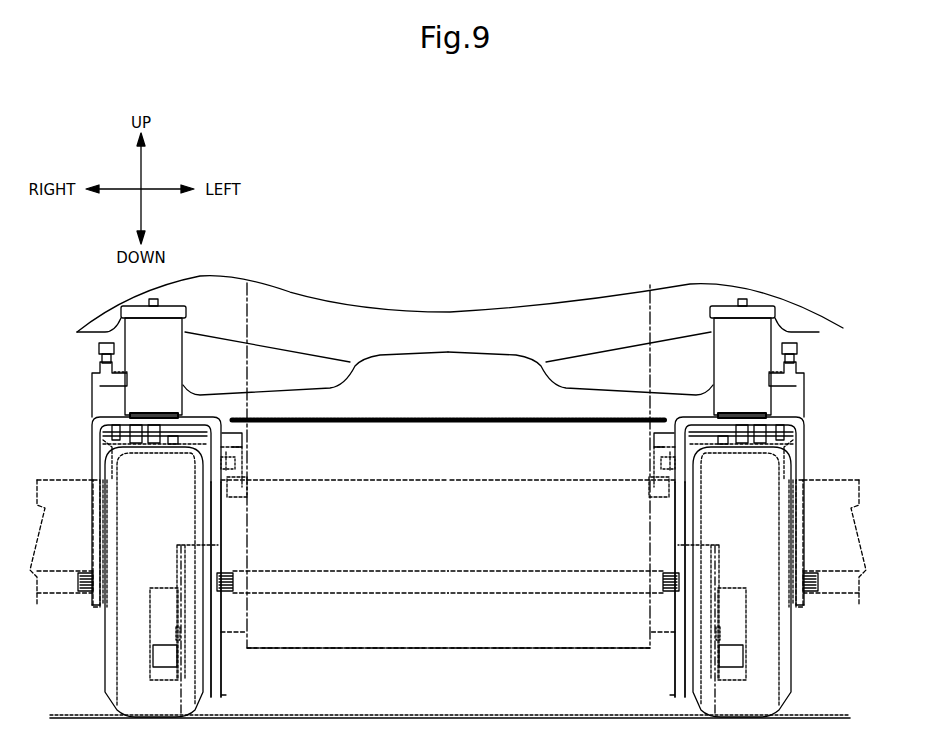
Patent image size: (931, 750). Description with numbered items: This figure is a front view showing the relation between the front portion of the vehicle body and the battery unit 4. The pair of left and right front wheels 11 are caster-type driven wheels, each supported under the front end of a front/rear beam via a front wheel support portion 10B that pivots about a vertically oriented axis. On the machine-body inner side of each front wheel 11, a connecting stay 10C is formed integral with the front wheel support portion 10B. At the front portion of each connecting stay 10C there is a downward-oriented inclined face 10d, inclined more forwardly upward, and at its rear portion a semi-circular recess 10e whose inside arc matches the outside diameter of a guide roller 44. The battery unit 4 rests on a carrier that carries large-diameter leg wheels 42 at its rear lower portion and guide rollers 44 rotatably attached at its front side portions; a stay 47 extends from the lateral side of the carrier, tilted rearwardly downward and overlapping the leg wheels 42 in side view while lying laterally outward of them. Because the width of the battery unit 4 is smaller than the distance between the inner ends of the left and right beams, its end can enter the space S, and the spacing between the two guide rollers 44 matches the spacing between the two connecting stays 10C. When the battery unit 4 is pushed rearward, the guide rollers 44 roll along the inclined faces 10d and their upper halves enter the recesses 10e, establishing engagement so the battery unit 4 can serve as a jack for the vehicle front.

The battery unit 4 is at (433, 648).
The space S is at (483, 634).
The front wheel support portion 10B is at (90, 457).
The connecting stay 10C is at (224, 433).
The inclined face 10d is at (227, 462).
The recess 10e is at (232, 440).
The front wheel 11 is at (128, 673).
The large-diameter leg wheel 42 is at (220, 696).
The guide roller 44 is at (230, 497).
The stay 47 is at (150, 626).